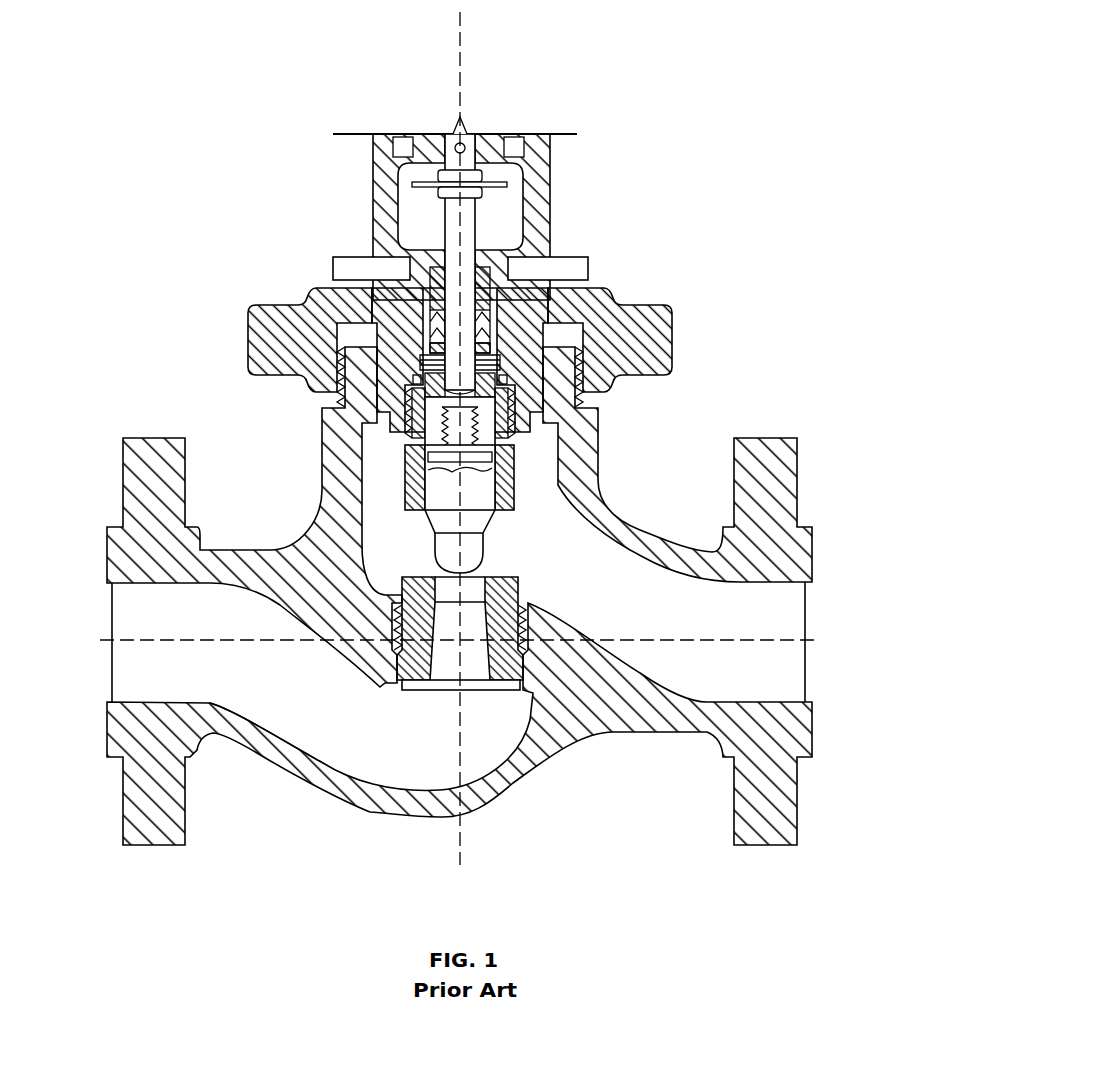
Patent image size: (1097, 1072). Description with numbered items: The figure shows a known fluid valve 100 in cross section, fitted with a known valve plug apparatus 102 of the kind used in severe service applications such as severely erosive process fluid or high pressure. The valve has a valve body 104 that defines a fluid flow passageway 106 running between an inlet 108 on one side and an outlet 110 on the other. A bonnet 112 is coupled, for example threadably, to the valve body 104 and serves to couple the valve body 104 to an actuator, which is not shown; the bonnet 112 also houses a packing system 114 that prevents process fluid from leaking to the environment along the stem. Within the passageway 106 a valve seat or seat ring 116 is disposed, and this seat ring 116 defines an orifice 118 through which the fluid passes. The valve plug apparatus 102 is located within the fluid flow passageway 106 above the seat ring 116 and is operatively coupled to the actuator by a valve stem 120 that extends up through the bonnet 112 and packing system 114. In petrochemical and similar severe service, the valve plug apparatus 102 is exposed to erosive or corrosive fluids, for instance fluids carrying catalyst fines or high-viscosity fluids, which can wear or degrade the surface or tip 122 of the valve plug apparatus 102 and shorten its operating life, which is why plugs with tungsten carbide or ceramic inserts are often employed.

The fluid valve 100 is at (456, 438).
The valve plug apparatus 102 is at (545, 485).
The valve body 104 is at (456, 596).
The fluid flow passageway 106 is at (371, 740).
The inlet 108 is at (107, 602).
The outlet 110 is at (812, 598).
The bonnet 112 is at (676, 337).
The packing system 114 is at (422, 328).
The seat ring 116 is at (407, 661).
The orifice 118 is at (450, 672).
The valve stem 120 is at (440, 228).
The tip 122 is at (495, 553).